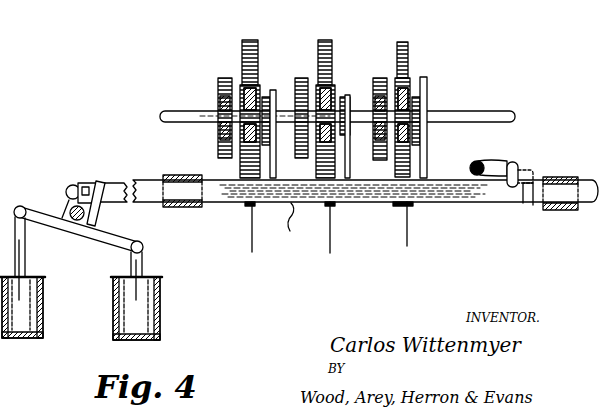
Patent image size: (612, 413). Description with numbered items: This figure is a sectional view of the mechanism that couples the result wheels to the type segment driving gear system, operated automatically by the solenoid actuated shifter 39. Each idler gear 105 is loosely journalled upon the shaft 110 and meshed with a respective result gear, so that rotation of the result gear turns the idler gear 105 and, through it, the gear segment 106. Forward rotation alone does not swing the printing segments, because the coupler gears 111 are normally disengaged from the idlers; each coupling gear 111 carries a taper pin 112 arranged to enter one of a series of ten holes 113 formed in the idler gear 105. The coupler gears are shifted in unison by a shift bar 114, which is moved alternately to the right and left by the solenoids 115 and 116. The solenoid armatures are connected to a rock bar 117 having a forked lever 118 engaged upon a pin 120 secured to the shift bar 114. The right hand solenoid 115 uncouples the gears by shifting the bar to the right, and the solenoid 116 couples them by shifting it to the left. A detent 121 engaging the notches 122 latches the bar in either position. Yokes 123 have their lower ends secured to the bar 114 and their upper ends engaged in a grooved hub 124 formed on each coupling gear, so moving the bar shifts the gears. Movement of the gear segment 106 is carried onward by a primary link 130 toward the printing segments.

The solenoid actuated shifter 39 is at (145, 174).
The idler gear 105 is at (219, 97).
The gear segment 106 is at (258, 55).
The shaft 110 is at (488, 111).
The coupler gear 111 is at (337, 83).
The taper pin 112 is at (241, 86).
The holes 113 is at (221, 82).
The shift bar 114 is at (287, 226).
The solenoid 115 is at (160, 288).
The solenoid 116 is at (38, 287).
The rock bar 117 is at (44, 217).
The forked lever 118 is at (80, 181).
The pin 120 is at (97, 207).
The detent 121 is at (513, 175).
The notches 122 is at (528, 186).
The yokes 123 is at (273, 168).
The grooved hub 124 is at (266, 97).
The primary link 130 is at (252, 228).